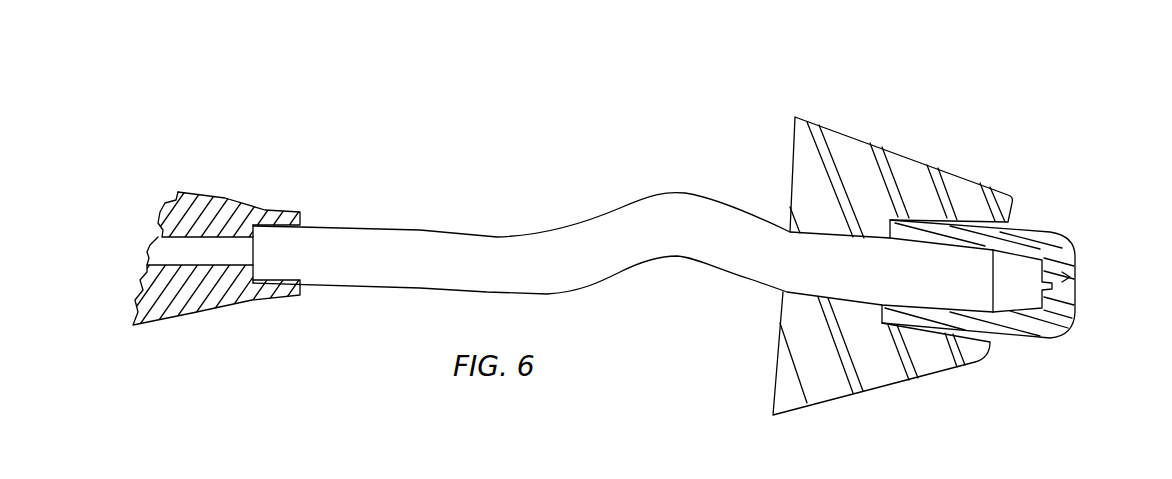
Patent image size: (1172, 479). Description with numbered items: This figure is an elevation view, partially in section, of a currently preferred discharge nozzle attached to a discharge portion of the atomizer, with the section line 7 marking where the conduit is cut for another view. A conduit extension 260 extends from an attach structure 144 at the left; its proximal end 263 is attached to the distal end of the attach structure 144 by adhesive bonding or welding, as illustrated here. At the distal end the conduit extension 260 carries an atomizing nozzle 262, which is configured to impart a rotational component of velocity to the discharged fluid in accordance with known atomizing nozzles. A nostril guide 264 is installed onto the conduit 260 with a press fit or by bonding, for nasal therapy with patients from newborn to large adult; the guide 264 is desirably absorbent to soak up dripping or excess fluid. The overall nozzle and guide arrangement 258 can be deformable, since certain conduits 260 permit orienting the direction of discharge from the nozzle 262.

The attach structure 144 is at (202, 203).
The tube assembly 258 is at (710, 105).
The conduit extension 260 is at (497, 238).
The atomizing nozzle 262 is at (1065, 240).
The proximal end 263 is at (317, 242).
The nostril guide 264 is at (902, 167).
The section line 7- 7 is at (420, 210).